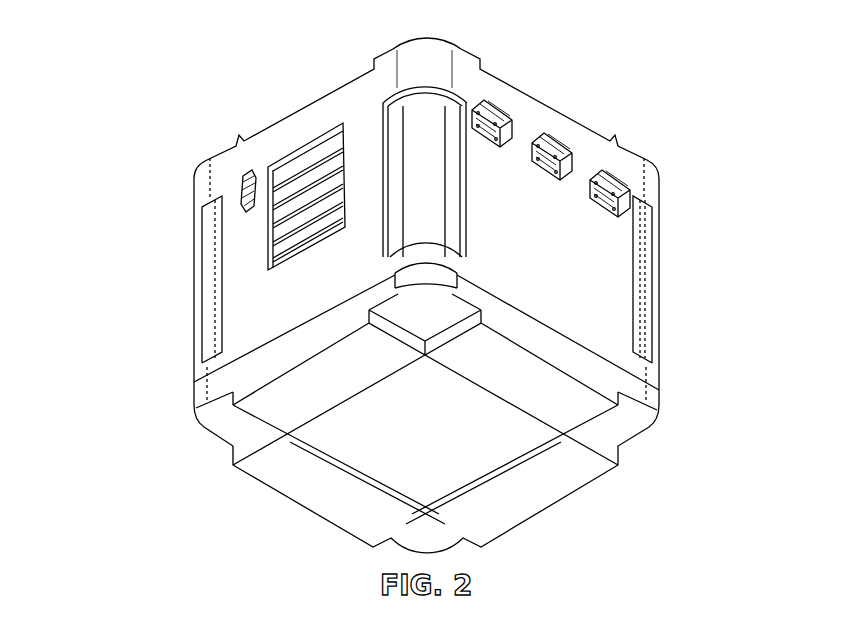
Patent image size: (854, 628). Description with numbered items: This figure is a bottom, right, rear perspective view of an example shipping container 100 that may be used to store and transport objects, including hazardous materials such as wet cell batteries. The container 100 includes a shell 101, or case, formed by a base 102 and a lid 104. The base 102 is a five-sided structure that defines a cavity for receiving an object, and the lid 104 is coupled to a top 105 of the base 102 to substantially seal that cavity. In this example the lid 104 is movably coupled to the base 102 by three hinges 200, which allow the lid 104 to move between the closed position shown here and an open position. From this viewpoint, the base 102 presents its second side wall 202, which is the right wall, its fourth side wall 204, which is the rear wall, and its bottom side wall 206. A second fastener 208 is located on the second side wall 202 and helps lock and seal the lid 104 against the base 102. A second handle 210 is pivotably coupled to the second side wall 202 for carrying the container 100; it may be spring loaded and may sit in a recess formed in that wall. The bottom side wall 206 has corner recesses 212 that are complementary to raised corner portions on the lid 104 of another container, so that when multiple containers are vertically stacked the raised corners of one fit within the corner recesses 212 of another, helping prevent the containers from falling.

The shipping container 100 is at (148, 54).
The shell 101 is at (100, 197).
The base 102 is at (243, 268).
The lid 104 is at (288, 135).
The top 105 is at (362, 118).
The hinges 200 is at (612, 187).
The second side wall 202 is at (243, 313).
The fourth side wall 204 is at (610, 243).
The bottom side wall 206 is at (403, 443).
The second fastener 208 is at (238, 187).
The second handle 210 is at (265, 227).
The corner recesses 212 is at (228, 452).